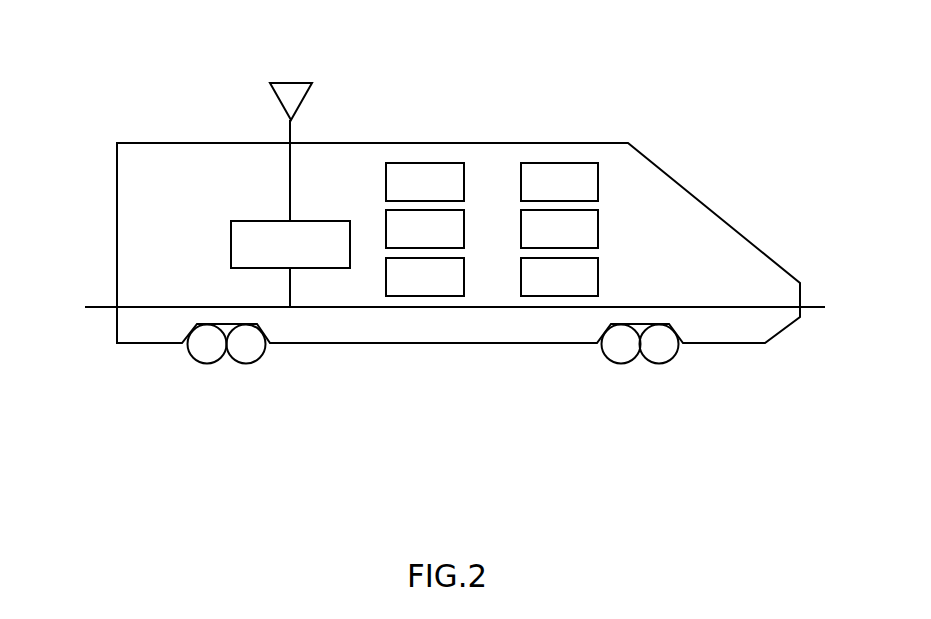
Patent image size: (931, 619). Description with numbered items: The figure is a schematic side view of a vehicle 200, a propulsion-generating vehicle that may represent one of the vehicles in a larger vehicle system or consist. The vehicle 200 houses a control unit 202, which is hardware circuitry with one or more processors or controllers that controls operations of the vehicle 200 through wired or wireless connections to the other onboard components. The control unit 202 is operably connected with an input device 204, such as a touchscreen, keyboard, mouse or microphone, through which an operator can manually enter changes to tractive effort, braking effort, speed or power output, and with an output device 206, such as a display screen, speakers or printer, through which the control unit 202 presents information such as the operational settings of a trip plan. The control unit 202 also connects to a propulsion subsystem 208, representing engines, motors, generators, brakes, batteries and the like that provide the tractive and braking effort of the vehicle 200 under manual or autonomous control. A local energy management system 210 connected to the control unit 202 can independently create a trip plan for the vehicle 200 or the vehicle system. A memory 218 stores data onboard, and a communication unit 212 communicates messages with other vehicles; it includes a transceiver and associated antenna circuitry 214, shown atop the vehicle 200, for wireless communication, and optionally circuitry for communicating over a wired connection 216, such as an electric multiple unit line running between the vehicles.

The vehicle 200 is at (713, 207).
The control unit 202 is at (425, 229).
The input device 204 is at (559, 229).
The output device 206 is at (559, 277).
The propulsion subsystem 208 is at (425, 277).
The local energy management system 210 is at (425, 182).
The communication unit 212 is at (290, 244).
The transceiver and associated circuitry 214 is at (291, 81).
The wired connection 216 is at (93, 311).
The memory 218 is at (559, 182).